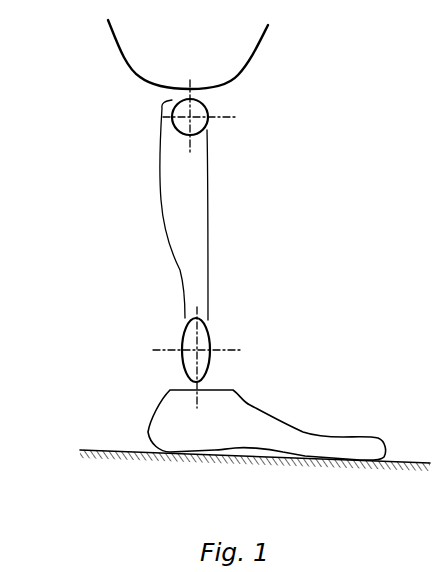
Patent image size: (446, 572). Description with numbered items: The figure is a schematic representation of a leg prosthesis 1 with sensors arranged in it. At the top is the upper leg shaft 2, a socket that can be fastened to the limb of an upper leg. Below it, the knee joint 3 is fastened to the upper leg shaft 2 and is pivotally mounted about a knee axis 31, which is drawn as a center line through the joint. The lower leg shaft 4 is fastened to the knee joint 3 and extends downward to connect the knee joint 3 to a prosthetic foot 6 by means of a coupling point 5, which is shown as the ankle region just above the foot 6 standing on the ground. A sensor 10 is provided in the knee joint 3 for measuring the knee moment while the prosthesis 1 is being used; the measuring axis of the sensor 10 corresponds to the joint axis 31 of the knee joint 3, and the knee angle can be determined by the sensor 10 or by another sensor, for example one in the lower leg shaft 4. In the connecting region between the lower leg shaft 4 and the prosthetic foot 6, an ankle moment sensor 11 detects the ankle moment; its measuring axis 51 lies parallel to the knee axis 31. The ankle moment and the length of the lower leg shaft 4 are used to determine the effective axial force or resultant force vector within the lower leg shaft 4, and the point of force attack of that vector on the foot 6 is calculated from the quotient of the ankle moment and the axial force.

The leg prosthesis 1 is at (66, 130).
The upper leg shaft 2 is at (119, 57).
The knee joint 3 is at (153, 120).
The sensor 10 is at (212, 112).
The knee axis 31 is at (185, 118).
The lower leg shaft 4 is at (165, 228).
The coupling point 5 is at (181, 359).
The ankle moment sensor 11 is at (214, 338).
The measuring axis 51 is at (191, 348).
The prosthetic foot 6 is at (148, 427).